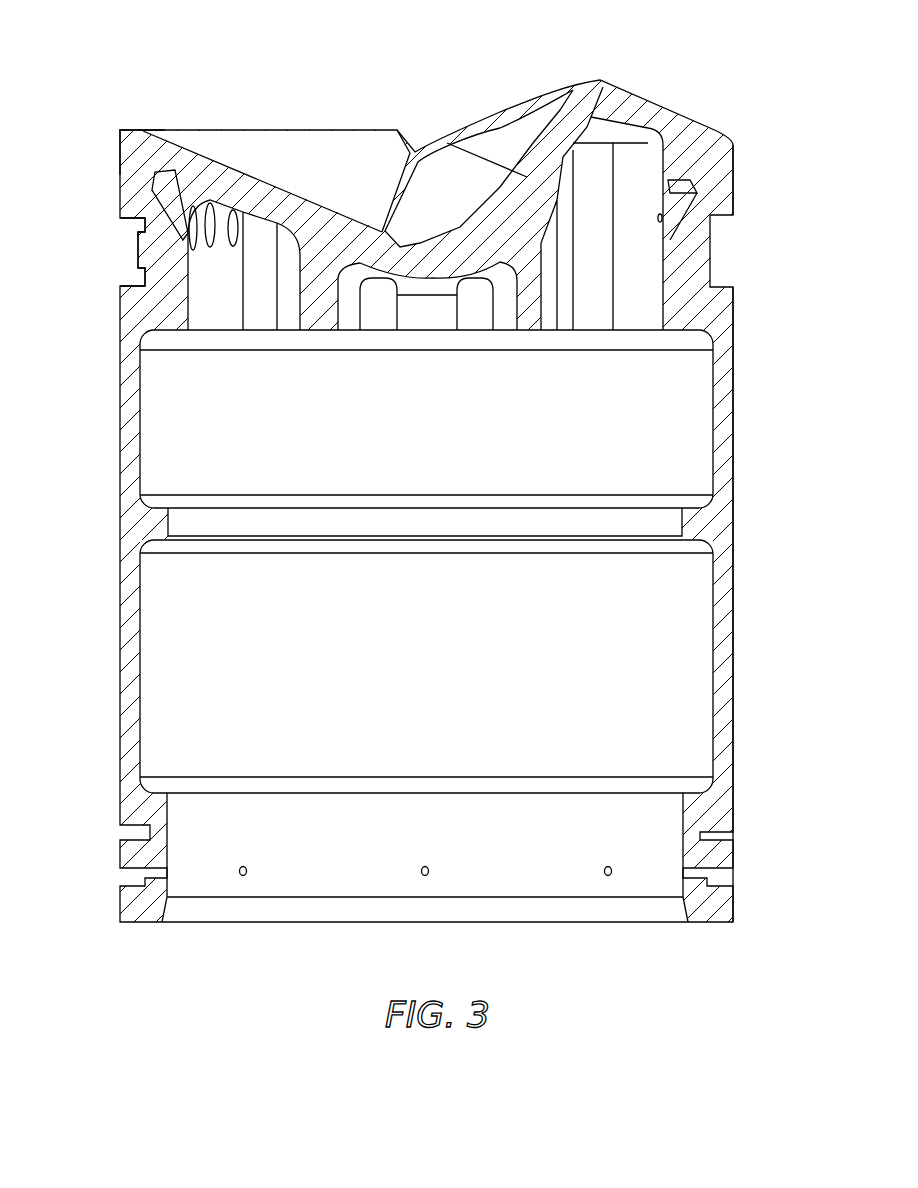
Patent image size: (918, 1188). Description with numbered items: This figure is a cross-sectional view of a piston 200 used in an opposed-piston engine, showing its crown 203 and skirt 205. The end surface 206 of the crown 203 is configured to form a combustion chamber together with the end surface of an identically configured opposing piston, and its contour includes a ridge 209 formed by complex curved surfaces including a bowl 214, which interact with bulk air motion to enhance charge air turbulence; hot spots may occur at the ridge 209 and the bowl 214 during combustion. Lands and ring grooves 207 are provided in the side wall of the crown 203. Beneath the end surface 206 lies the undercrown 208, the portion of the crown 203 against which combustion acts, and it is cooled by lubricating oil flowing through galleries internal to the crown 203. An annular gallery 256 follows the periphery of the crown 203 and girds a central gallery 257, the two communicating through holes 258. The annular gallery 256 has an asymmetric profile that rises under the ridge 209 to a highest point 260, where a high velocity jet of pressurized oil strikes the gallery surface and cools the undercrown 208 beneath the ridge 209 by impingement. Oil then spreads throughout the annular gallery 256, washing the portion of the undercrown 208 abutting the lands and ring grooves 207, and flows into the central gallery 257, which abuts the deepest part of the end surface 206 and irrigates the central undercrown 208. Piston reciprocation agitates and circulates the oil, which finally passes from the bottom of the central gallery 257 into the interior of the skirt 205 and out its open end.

The piston 200 is at (107, 398).
The crown 203 is at (118, 168).
The skirt 205 is at (734, 462).
The end surface 206 is at (338, 124).
The lands and ring grooves 207 is at (108, 202).
The undercrown 208 is at (700, 389).
The ridge 209 is at (620, 85).
The bowl 214 is at (440, 190).
The annular gallery 256 is at (217, 270).
The central gallery 257 is at (430, 315).
The holes 258 is at (377, 297).
The highest point of annular gallery 260 is at (636, 207).